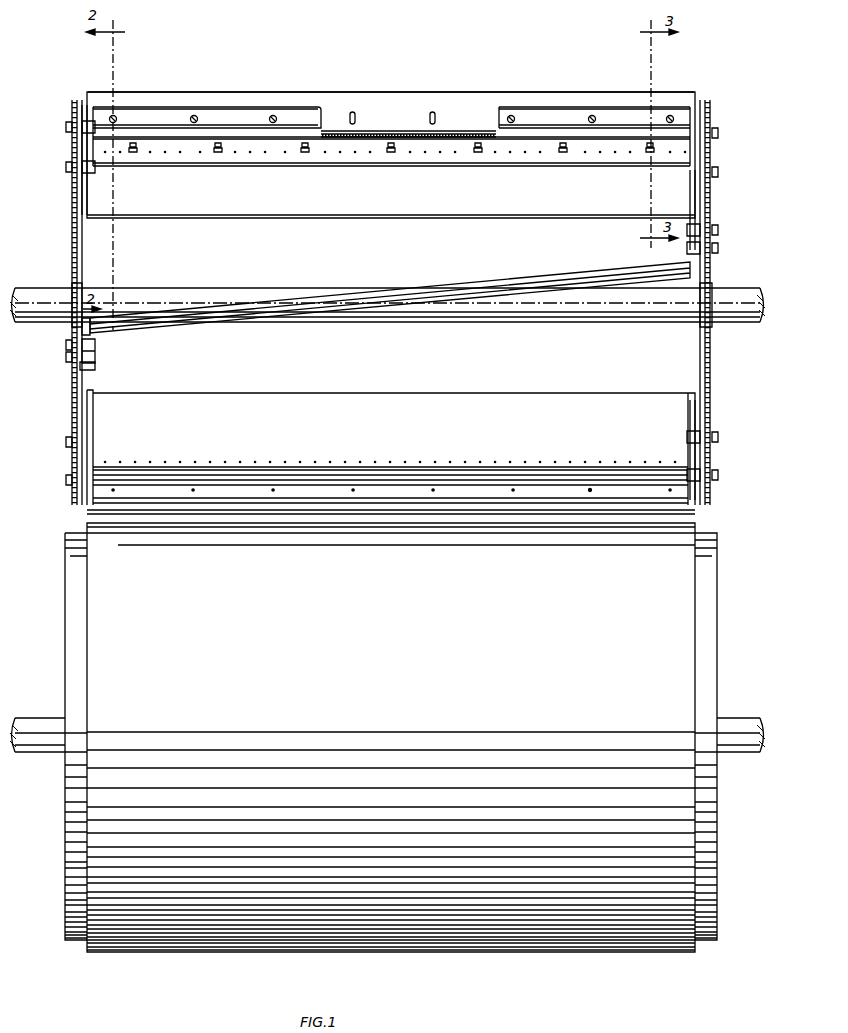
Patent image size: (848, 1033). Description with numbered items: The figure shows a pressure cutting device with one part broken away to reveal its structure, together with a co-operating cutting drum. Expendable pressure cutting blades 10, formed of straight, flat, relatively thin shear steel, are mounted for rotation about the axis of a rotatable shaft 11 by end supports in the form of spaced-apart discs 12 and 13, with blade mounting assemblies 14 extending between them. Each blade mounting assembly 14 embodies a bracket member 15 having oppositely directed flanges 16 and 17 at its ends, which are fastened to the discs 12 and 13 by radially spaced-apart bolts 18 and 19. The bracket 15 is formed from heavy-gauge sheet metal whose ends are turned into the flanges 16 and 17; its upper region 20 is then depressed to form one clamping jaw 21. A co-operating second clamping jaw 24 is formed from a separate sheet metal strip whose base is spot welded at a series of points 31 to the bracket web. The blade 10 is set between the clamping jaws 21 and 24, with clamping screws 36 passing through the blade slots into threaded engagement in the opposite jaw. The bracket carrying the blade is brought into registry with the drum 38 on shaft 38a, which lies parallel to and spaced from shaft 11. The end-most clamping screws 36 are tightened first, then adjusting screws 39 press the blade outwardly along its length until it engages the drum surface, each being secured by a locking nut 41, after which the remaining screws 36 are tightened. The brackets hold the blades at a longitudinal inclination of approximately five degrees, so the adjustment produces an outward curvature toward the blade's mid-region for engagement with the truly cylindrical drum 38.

The pressure cutting blade 10 is at (405, 105).
The rotatable shaft 11 is at (725, 292).
The disc 12 is at (72, 250).
The disc 13 is at (710, 358).
The blade mounting assembly 14 is at (350, 223).
The bracket member 15 is at (483, 200).
The flange 16 is at (82, 196).
The flange 17 is at (700, 228).
The bolt 18 is at (67, 127).
The bolt 19 is at (717, 130).
The upper region 20 is at (367, 488).
The clamping jaw 21 is at (210, 300).
The second clamping jaw 24 is at (215, 118).
The spot weld points 31 is at (200, 152).
The clamping screw 36 is at (116, 117).
The cutting drum 38 is at (290, 935).
The shaft 38a is at (735, 742).
The adjusting screw 39 is at (135, 155).
The locking nut 41 is at (310, 148).